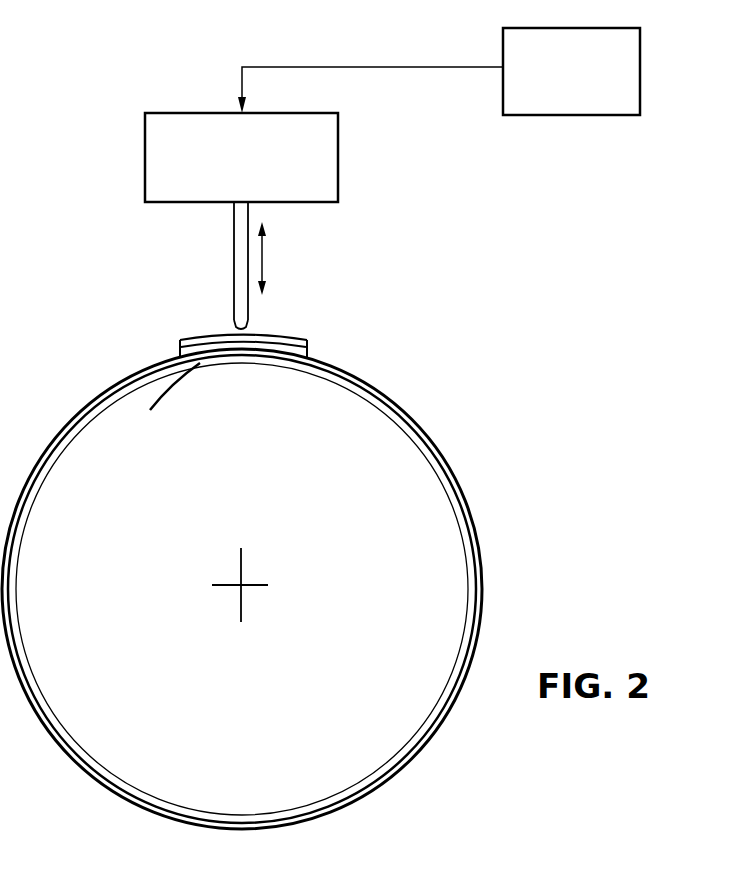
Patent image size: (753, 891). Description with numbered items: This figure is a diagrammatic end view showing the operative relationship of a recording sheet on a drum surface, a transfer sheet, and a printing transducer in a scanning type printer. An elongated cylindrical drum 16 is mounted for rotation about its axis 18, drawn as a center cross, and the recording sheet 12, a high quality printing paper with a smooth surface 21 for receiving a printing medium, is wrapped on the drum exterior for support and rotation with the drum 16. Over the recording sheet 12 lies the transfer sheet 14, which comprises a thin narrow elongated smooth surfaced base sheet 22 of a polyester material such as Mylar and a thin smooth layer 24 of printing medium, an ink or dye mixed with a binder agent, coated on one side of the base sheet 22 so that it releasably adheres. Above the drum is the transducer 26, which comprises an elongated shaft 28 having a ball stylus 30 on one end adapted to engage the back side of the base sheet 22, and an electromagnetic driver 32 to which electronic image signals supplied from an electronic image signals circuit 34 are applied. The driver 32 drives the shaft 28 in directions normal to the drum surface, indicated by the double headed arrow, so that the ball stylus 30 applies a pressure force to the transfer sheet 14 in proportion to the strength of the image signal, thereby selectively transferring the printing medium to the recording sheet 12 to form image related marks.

The recording sheet 12 is at (477, 552).
The transfer sheet 14 is at (307, 340).
The drum 16 is at (470, 593).
The axis 18 is at (241, 585).
The smooth surface 21 is at (470, 513).
The base sheet 22 is at (180, 338).
The layer of printing medium 24 is at (165, 357).
The transducer 26 is at (138, 163).
The shaft 28 is at (234, 220).
The ball stylus 30 is at (232, 322).
The electromagnetic driver 32 is at (338, 142).
The electronic image signals circuit 34 is at (635, 60).